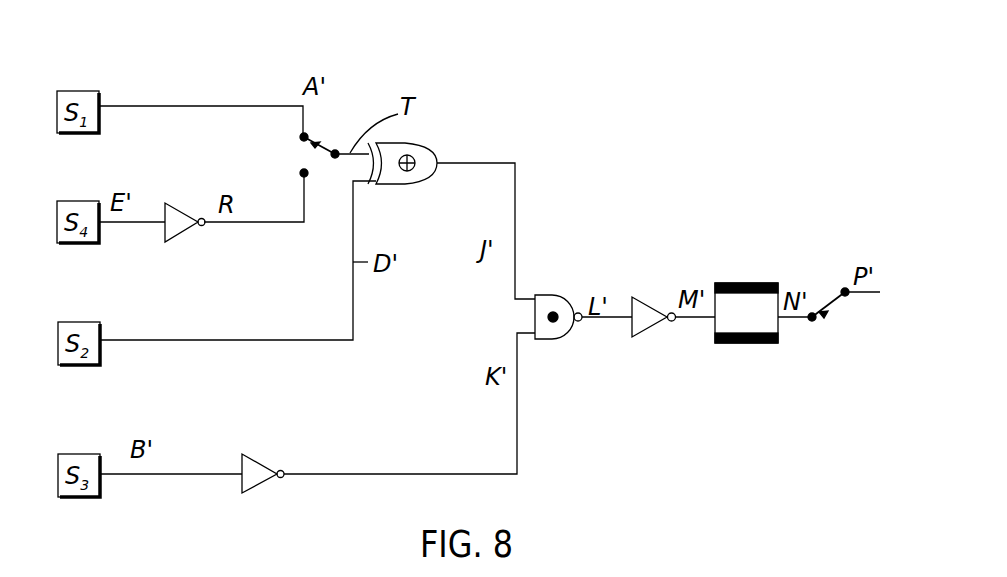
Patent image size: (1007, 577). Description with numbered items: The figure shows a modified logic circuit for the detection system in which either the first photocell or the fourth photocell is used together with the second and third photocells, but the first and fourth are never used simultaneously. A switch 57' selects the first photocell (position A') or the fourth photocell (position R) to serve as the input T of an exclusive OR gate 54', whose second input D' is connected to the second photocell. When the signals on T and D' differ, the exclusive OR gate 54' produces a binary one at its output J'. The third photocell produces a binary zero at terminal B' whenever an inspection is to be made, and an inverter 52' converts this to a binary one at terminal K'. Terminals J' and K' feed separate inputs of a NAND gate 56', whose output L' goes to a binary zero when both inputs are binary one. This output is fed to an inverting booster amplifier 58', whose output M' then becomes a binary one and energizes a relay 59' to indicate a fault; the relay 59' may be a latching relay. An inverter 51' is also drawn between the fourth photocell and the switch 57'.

The inverter 51' is at (189, 205).
The inverter 52' is at (388, 413).
The exclusive OR gate 54' is at (451, 206).
The NAND gate 56' is at (583, 303).
The switch 57' is at (286, 165).
The inverting booster amplifier 58' is at (673, 300).
The relay 59' is at (797, 298).